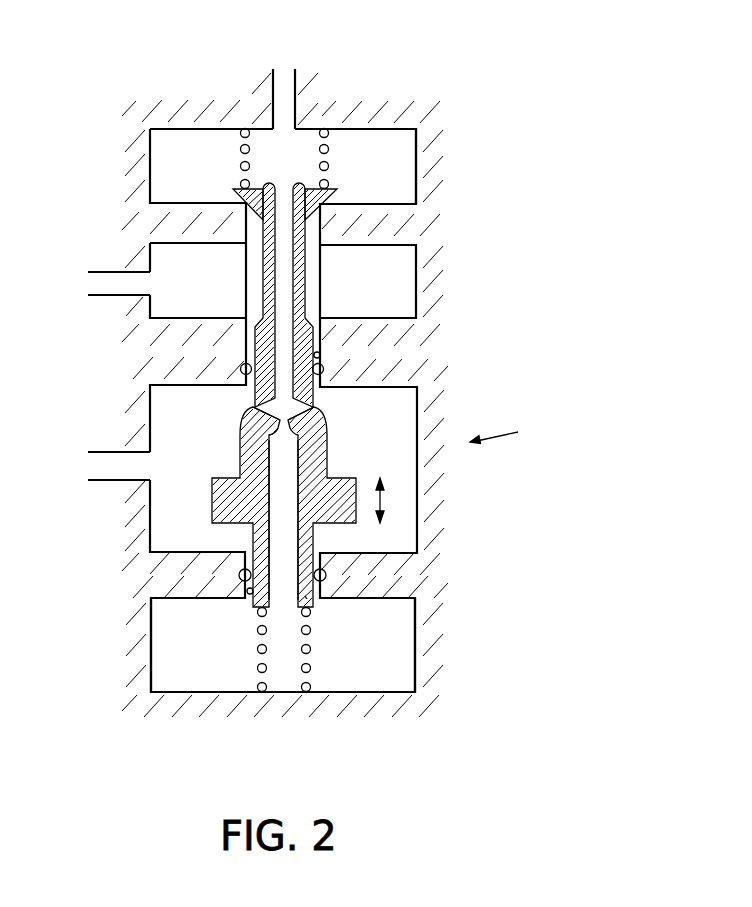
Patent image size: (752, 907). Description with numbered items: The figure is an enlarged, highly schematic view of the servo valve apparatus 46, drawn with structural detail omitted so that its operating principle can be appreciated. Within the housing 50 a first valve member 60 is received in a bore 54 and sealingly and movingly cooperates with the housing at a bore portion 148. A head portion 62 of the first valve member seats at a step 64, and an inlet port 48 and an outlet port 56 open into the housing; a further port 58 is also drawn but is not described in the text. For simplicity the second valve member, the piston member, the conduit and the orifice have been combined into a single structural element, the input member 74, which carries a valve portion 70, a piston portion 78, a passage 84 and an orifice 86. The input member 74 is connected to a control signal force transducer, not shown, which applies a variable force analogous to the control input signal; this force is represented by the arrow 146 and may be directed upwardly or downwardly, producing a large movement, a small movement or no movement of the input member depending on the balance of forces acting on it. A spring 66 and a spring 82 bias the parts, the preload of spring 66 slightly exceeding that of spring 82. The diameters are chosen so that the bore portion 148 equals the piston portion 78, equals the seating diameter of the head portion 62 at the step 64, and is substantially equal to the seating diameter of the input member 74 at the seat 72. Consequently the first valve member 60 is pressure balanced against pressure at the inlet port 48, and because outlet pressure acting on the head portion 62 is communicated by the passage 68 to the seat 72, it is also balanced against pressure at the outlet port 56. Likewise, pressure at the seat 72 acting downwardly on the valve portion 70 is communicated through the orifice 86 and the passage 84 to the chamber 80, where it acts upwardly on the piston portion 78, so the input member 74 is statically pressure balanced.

The servo valve apparatus 46 is at (512, 434).
The inlet port 48 is at (113, 292).
The housing 50 is at (355, 712).
The bore 54 is at (286, 274).
The outlet port 56 is at (283, 63).
The outlet port 58 is at (117, 478).
The first valve member 60 is at (263, 279).
The head portion 62 is at (263, 185).
The step 64 is at (362, 183).
The spring 66 is at (332, 150).
The passage 68 is at (280, 195).
The valve portion 70 is at (320, 423).
The seat 72 is at (250, 412).
The input member 74 is at (287, 512).
The piston portion 78 is at (307, 600).
The chamber 80 is at (378, 677).
The spring 82 is at (258, 650).
The passage 84 is at (272, 497).
The orifice 86 is at (268, 437).
The arrow 146 is at (380, 498).
The bore portion 148 is at (320, 352).